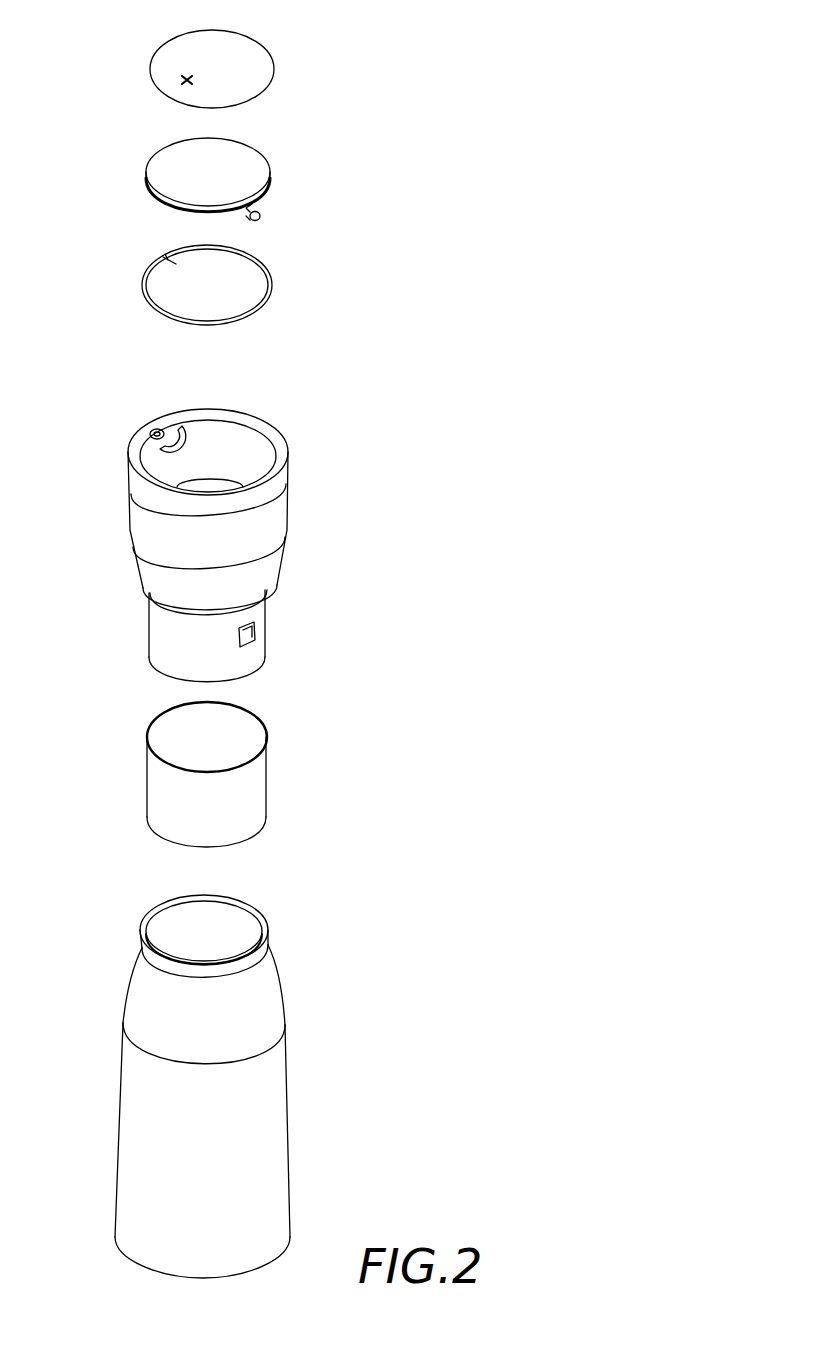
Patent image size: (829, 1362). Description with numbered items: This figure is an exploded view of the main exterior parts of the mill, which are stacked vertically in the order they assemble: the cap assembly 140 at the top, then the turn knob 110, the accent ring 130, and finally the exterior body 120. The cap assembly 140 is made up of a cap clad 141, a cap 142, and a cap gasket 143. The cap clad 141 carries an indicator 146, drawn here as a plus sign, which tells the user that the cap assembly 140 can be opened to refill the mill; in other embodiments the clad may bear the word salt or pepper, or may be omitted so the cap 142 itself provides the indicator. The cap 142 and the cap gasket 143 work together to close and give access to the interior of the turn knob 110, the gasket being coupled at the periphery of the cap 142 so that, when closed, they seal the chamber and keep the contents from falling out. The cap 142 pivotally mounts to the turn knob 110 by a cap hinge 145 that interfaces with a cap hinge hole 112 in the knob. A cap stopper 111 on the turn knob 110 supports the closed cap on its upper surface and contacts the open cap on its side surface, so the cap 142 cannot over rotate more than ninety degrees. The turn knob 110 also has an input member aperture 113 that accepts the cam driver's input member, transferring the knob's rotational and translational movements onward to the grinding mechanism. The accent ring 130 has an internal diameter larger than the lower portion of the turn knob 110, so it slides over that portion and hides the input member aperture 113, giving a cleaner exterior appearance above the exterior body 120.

The turn knob 110 is at (325, 525).
The cap stopper 111 is at (177, 428).
The cap hinge hole 112 is at (152, 432).
The input member aperture 113 is at (256, 630).
The exterior body 120 is at (320, 1120).
The accent ring 130 is at (295, 782).
The cap assembly 140 is at (100, 5).
The cap clad 141 is at (280, 72).
The cap 142 is at (272, 178).
The cap gasket 143 is at (273, 285).
The cap hinge 145 is at (259, 218).
The indicator 146 is at (190, 73).